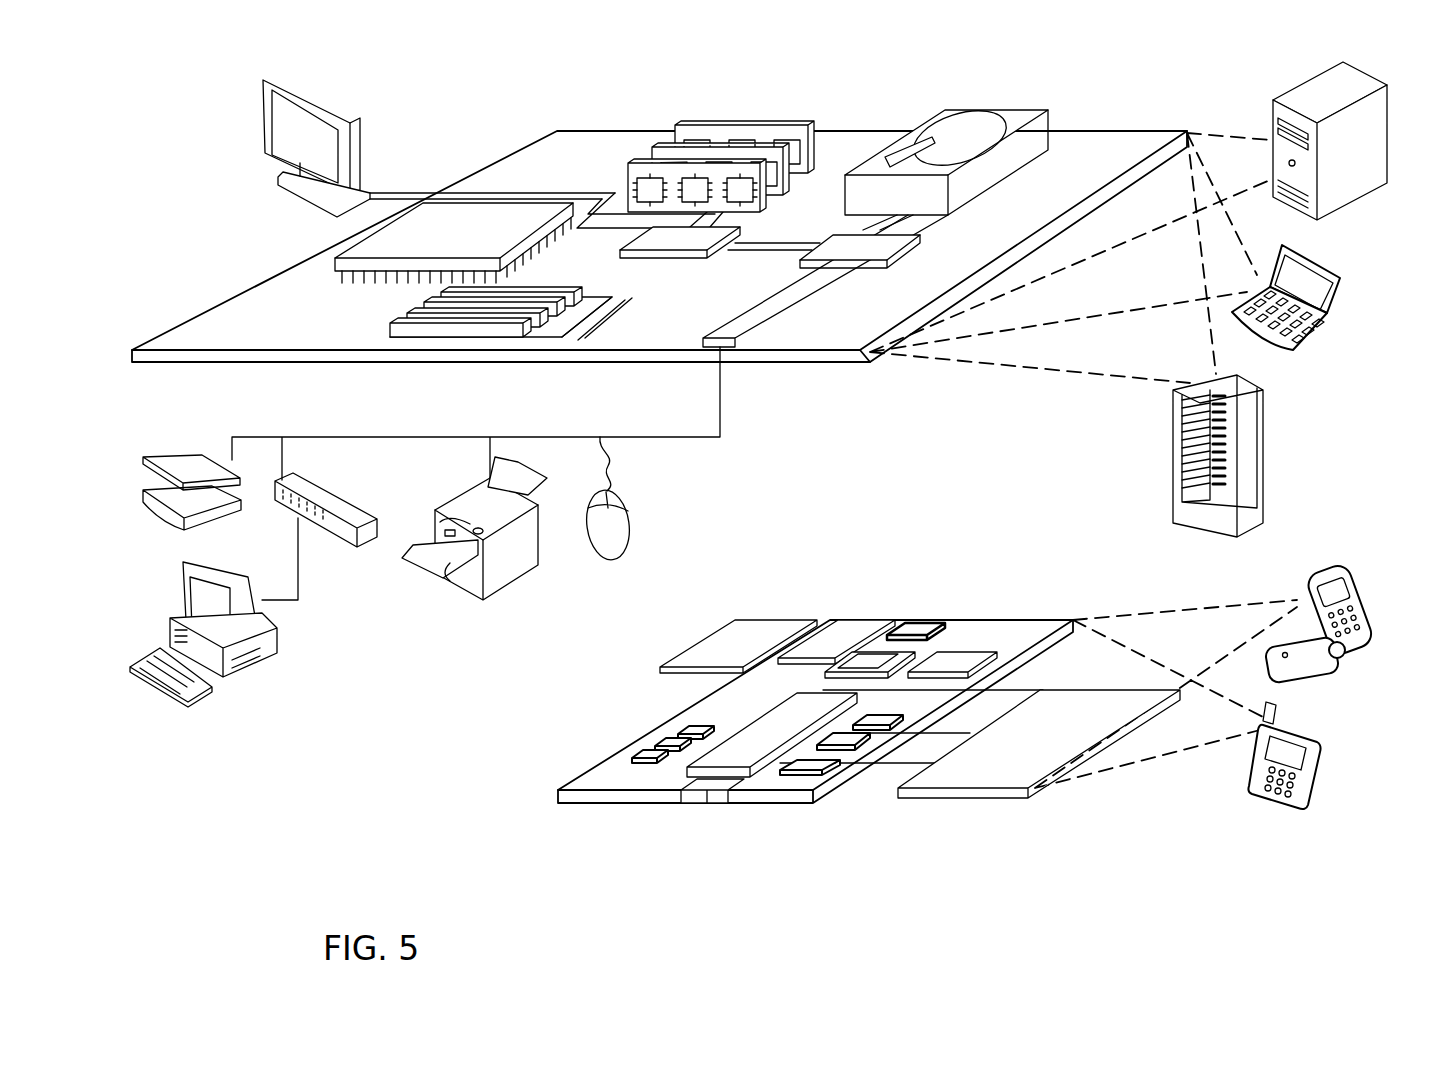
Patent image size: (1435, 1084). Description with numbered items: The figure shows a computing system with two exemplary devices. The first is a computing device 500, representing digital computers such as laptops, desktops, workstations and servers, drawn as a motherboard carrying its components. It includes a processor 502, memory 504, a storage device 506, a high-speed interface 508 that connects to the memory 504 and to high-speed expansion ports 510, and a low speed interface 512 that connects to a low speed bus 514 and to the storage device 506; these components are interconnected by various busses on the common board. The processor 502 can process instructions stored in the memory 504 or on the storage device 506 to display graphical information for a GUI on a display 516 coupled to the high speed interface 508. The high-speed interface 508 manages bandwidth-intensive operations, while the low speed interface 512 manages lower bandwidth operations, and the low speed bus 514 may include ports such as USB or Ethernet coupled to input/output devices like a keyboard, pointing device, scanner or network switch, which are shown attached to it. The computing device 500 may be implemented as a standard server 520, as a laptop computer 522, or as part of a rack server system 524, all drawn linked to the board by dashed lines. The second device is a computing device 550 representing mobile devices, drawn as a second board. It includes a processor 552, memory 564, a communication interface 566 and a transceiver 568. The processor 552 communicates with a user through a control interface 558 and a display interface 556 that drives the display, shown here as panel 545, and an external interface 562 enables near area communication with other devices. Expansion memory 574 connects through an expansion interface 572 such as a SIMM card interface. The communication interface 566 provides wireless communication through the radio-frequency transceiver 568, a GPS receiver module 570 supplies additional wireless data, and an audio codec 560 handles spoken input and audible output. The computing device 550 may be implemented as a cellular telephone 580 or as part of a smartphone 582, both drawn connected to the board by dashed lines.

The computing device 500 is at (471, 103).
The processor 502 is at (335, 258).
The memory 504 is at (690, 122).
The storage device 506 is at (938, 116).
The high-speed interface 508 is at (633, 240).
The high-speed expansion ports 510 is at (415, 322).
The low speed interface 512 is at (842, 242).
The low speed bus 514 is at (727, 348).
The display 516 is at (265, 80).
The standard server 520 is at (1272, 120).
The laptop computer 522 is at (1340, 273).
The rack server system 524 is at (1173, 483).
The display panel 545 is at (995, 776).
The computing device 550 is at (531, 802).
The processor 552 is at (745, 760).
The display interface 556 is at (816, 768).
The control interface 558 is at (852, 740).
The audio codec 560 is at (878, 720).
The external interface 562 is at (707, 797).
The memory 564 is at (658, 748).
The communication interface 566 is at (872, 660).
The transceiver 568 is at (955, 660).
The GPS receiver module 570 is at (927, 626).
The expansion interface 572 is at (797, 632).
The expansion memory 574 is at (735, 633).
The cellular telephone 580 is at (1325, 578).
The smartphone 582 is at (1262, 768).